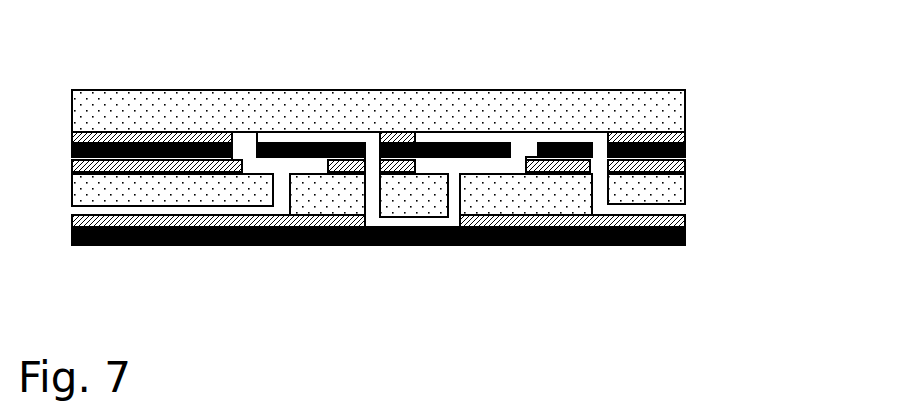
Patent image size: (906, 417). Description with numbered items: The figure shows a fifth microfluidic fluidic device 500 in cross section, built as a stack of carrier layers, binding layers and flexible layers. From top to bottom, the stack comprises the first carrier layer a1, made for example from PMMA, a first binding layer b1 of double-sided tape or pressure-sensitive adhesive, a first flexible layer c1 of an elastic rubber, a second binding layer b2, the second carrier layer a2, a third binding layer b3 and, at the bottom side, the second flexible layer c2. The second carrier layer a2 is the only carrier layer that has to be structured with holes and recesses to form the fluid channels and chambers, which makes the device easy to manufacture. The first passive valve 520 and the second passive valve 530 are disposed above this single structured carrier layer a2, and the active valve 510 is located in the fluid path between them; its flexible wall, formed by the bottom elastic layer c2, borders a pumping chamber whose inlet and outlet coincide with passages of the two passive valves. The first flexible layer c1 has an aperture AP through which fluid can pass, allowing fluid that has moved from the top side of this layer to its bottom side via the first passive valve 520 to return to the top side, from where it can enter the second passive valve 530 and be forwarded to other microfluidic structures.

The fluidic device 500 is at (115, 55).
The first passive valve 520 is at (240, 116).
The second passive valve 530 is at (498, 115).
The active valve 510 is at (404, 260).
The aperture AP is at (373, 195).
The first carrier layer a1 is at (672, 108).
The first binding layer b1 is at (685, 137).
The first flexible layer c1 is at (685, 150).
The second binding layer b2 is at (685, 168).
The second carrier layer a2 is at (678, 188).
The third binding layer b3 is at (685, 222).
The second flexible layer c2 is at (685, 238).